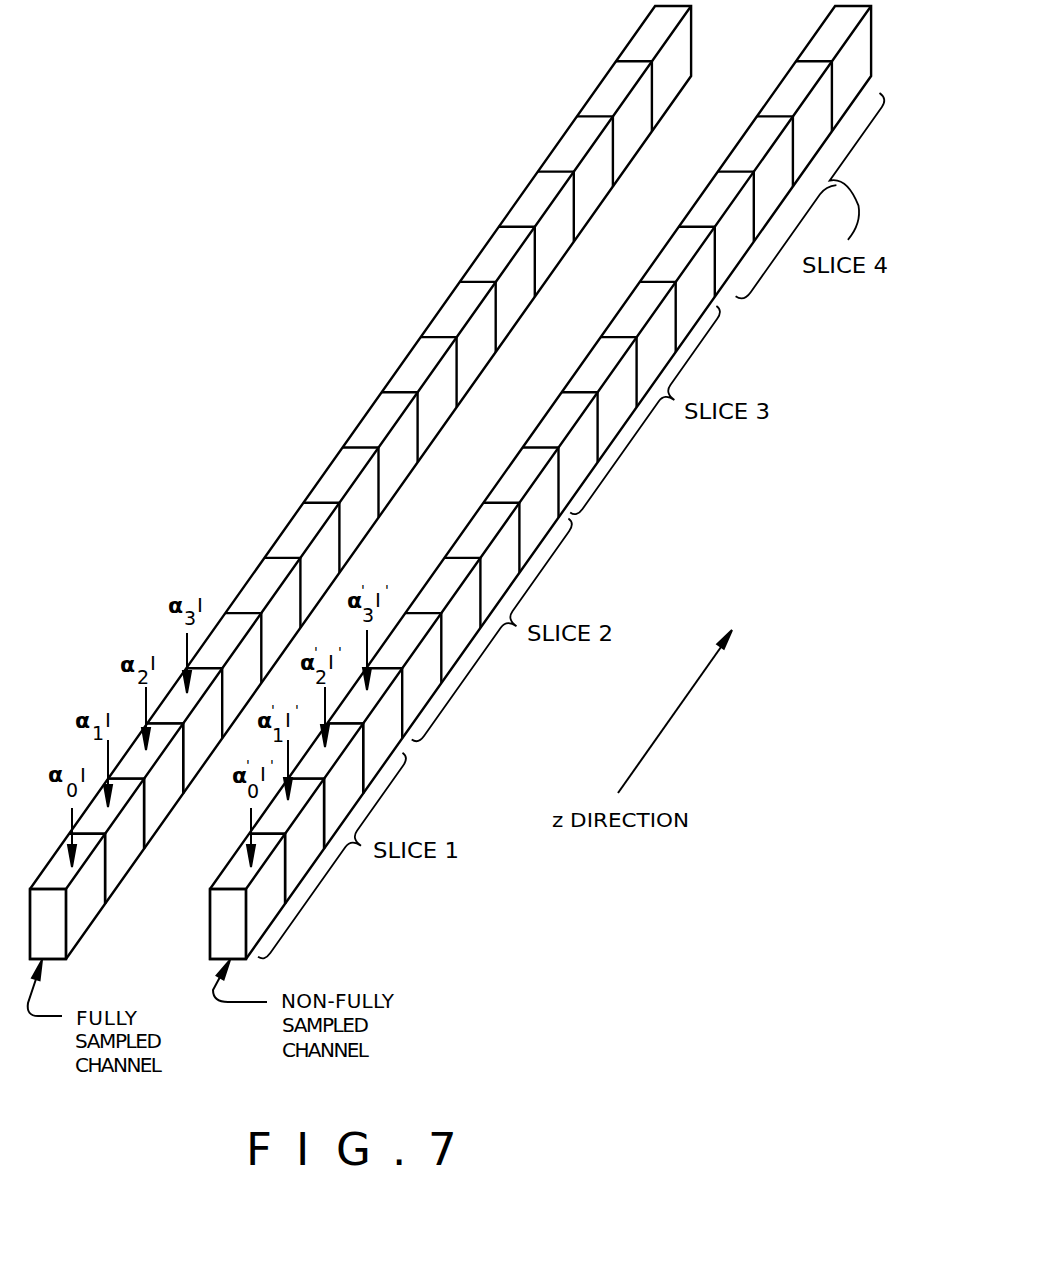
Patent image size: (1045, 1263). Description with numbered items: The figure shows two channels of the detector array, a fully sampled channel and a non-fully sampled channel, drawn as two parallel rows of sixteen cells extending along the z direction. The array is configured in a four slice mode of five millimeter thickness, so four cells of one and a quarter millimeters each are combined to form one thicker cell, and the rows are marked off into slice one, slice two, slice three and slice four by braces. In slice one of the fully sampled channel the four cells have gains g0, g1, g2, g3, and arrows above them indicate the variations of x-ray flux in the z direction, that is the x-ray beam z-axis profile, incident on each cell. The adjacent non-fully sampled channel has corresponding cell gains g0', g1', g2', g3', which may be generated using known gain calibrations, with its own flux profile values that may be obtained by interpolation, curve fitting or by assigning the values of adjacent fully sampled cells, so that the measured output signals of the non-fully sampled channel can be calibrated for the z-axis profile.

The gain of first fully sampled cell g0 is at (67, 896).
The gain of second fully sampled cell g1 is at (106, 841).
The gain of third fully sampled cell g2 is at (145, 785).
The gain of fourth fully sampled cell g3 is at (184, 730).
The gain of first non-fully sampled cell g0' is at (247, 896).
The gain of second non-fully sampled cell g1' is at (286, 841).
The gain of third non-fully sampled cell g2' is at (325, 785).
The gain of fourth non-fully sampled cell g3' is at (364, 730).